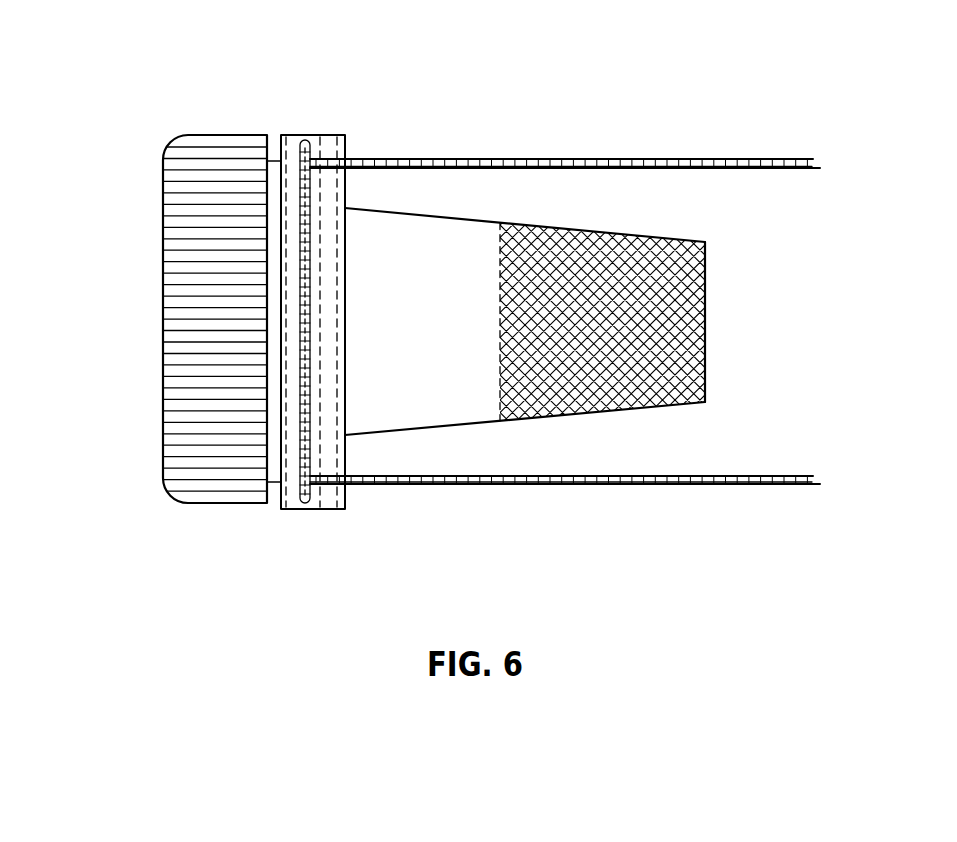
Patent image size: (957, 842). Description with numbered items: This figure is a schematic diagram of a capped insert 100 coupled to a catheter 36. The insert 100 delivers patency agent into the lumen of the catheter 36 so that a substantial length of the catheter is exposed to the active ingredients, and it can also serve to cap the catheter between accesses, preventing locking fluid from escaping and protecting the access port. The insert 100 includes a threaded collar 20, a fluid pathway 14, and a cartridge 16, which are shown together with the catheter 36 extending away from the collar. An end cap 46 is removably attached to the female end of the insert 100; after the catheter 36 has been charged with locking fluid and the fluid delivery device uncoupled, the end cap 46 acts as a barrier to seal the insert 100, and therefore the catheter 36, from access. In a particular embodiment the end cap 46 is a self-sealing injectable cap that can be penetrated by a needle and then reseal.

The fluid pathway 14 is at (408, 338).
The cartridge 16 is at (500, 268).
The threaded collar 20 is at (280, 135).
The catheter 36 is at (581, 158).
The end cap 46 is at (163, 329).
The insert 100 is at (724, 410).